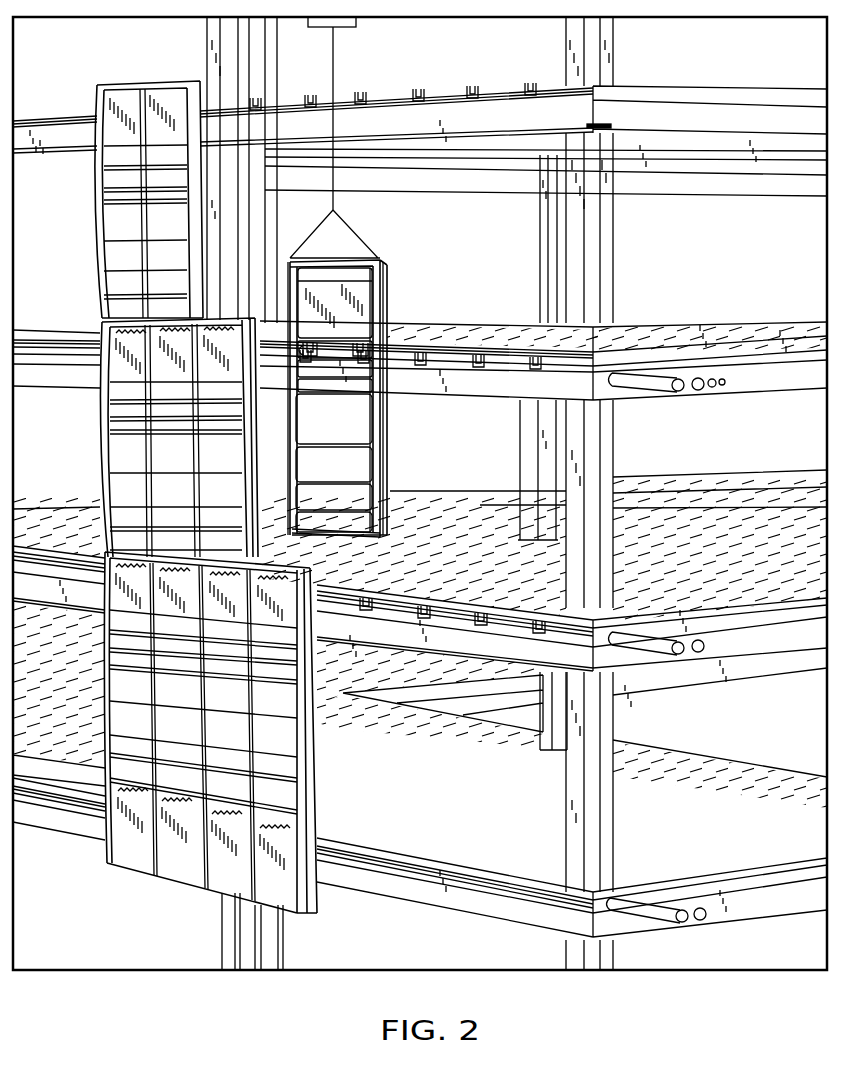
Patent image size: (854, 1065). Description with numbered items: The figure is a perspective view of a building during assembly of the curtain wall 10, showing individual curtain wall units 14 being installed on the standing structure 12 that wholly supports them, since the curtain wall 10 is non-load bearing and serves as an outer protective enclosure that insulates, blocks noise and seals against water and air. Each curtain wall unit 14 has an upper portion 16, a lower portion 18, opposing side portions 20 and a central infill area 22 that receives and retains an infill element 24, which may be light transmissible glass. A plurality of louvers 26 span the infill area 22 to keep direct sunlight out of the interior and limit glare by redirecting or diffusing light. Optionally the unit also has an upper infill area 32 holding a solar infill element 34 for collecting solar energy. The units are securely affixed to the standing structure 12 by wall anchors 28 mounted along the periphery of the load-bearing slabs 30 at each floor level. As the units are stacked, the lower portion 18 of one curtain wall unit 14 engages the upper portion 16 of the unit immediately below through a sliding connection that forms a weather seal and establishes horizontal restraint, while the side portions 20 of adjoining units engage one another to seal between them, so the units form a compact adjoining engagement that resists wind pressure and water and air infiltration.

The curtain wall 10 is at (145, 81).
The standing structure 12 is at (266, 68).
The curtain wall unit 14 is at (371, 385).
The upper portion 16 is at (348, 252).
The lower portion 18 is at (374, 543).
The side portions 20 is at (288, 282).
The infill area 22 is at (370, 461).
The infill element 24 is at (356, 424).
The louvers 26 is at (350, 358).
The wall anchors 28 is at (530, 94).
The slabs 30 is at (438, 97).
The upper infill area 32 is at (327, 291).
The solar infill element 34 is at (375, 286).